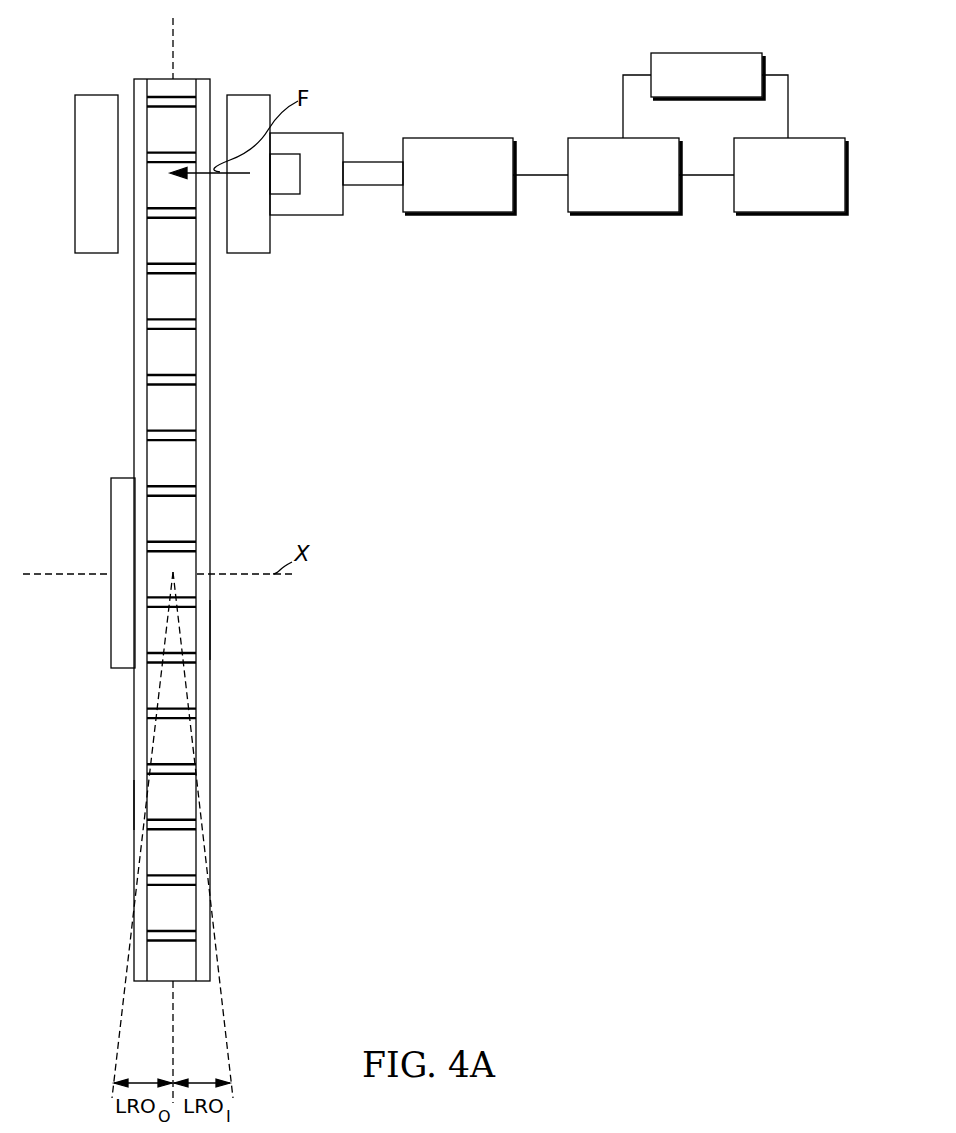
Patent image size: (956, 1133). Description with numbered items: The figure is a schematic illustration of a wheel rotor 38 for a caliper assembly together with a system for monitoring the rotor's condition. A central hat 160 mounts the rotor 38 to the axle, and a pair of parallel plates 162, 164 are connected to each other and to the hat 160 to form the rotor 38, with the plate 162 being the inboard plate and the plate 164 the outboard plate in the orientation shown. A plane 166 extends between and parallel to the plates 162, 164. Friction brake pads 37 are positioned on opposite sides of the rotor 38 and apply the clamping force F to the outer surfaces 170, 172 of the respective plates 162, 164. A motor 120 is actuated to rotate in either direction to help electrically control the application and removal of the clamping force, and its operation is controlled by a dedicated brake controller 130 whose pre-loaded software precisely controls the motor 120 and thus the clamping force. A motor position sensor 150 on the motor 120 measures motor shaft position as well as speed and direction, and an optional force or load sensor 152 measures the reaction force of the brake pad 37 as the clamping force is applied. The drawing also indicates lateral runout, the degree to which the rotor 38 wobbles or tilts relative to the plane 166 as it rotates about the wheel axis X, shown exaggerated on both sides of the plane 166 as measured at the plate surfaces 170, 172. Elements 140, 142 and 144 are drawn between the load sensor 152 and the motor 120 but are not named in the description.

The friction brake pads 37 is at (97, 95).
The wheel rotor 38 is at (210, 510).
The motor 120 is at (602, 190).
The brake controller 130 is at (790, 212).
The actuator 140 is at (437, 190).
The actuator rod 142 is at (373, 187).
The actuator housing 144 is at (307, 216).
The motor position sensor 150 is at (705, 53).
The force or load sensor 152 is at (302, 172).
The central hat 160 is at (127, 668).
The inboard plate 162 is at (204, 817).
The outboard plate 164 is at (138, 897).
The plane 166 is at (175, 35).
The outer surface of inboard plate 170 is at (208, 632).
The outer surface of outboard plate 172 is at (134, 800).